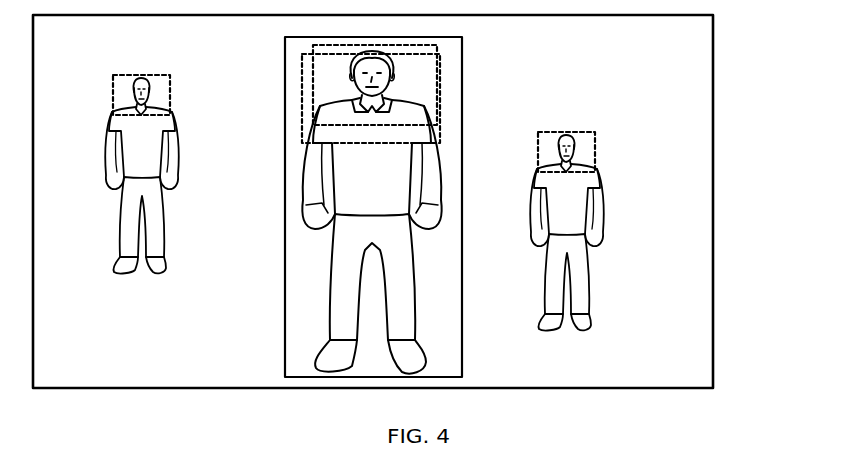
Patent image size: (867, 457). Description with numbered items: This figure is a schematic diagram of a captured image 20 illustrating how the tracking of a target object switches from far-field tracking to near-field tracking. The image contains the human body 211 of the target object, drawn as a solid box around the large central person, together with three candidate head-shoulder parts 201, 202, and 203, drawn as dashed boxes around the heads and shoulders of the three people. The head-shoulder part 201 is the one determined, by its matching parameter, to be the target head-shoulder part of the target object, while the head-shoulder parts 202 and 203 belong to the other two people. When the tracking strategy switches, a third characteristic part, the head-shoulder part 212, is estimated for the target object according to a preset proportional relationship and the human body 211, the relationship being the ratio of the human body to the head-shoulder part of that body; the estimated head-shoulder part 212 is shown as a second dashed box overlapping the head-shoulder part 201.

The image frame 20 is at (713, 203).
The head-shoulder part 201 is at (437, 44).
The head-shoulder part 202 is at (595, 152).
The head-shoulder part 203 is at (170, 98).
The human body 211 is at (462, 167).
The head-shoulder part 212 is at (302, 115).